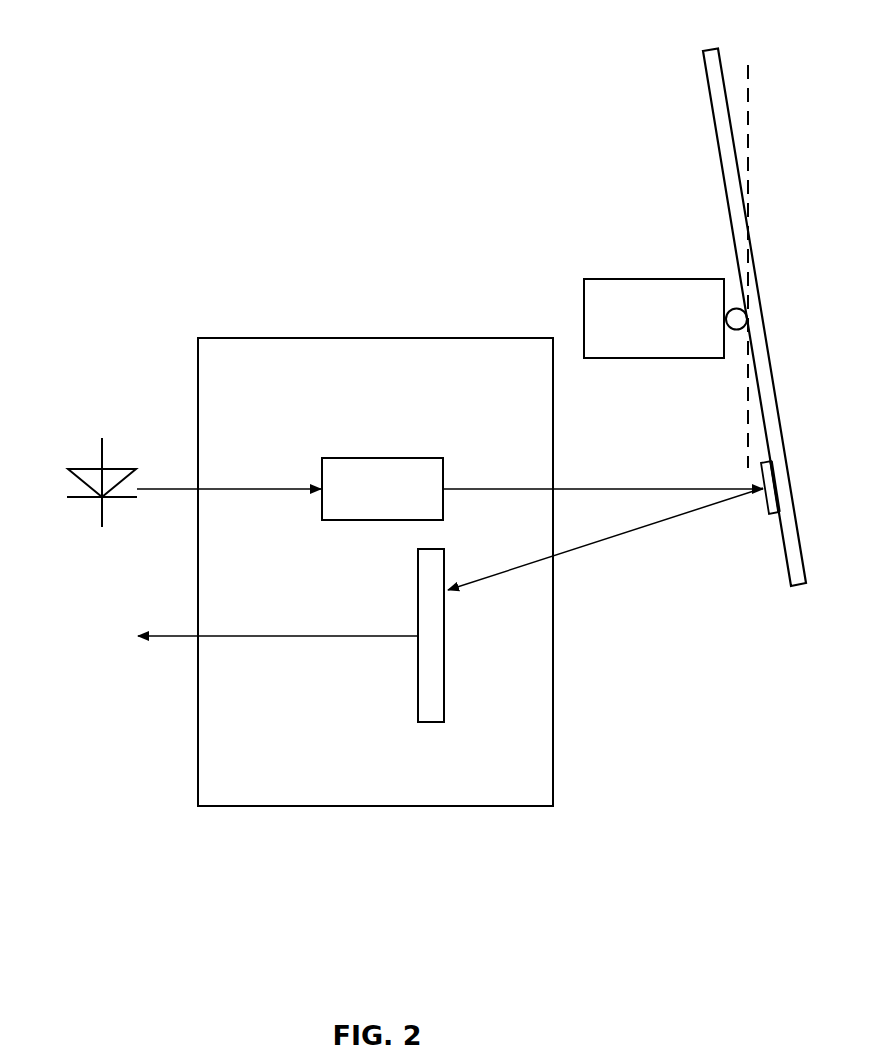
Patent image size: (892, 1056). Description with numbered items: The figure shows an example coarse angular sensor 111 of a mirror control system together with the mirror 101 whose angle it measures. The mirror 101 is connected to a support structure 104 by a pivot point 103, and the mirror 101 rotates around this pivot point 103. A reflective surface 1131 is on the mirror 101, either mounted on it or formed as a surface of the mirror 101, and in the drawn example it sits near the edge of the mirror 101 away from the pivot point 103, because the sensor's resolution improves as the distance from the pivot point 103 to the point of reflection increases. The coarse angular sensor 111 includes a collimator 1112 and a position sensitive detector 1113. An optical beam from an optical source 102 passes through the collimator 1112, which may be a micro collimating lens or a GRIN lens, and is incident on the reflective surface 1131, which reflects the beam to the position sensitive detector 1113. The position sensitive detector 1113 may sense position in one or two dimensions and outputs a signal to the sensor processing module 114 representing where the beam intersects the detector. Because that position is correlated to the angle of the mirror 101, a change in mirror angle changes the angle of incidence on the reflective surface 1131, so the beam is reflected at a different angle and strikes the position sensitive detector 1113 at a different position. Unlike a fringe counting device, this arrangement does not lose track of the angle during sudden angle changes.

The mirror 101 is at (708, 90).
The optical source 102 is at (102, 444).
The pivot point 103 is at (735, 308).
The support structure 104 is at (654, 318).
The coarse angular sensor 111 is at (375, 572).
The collimator 1112 is at (382, 489).
The position sensitive detector 1113 is at (444, 666).
The reflective surface 1131 is at (770, 517).
The sensor processing module 114 is at (225, 663).